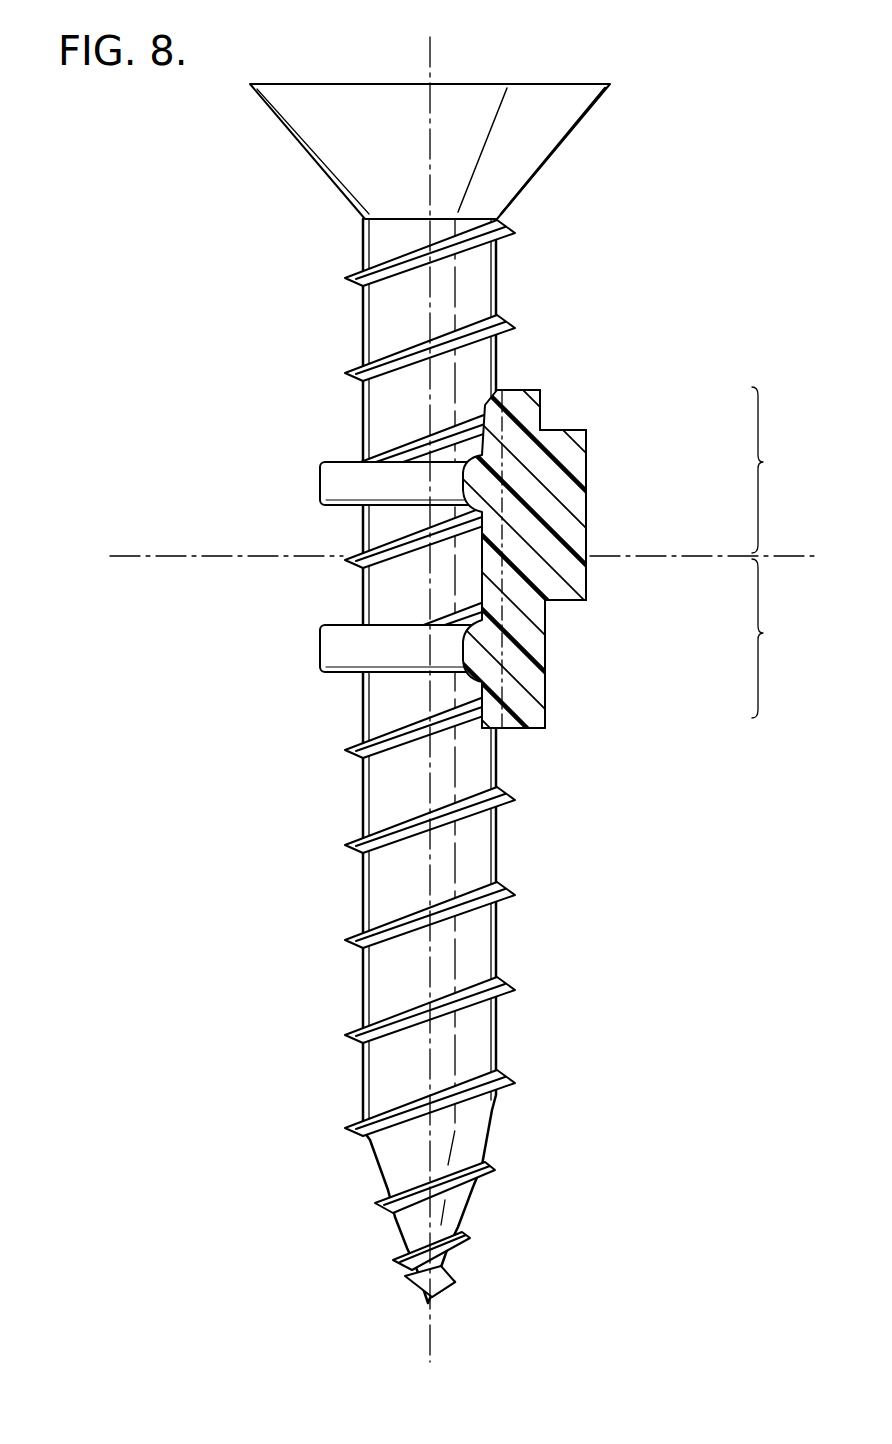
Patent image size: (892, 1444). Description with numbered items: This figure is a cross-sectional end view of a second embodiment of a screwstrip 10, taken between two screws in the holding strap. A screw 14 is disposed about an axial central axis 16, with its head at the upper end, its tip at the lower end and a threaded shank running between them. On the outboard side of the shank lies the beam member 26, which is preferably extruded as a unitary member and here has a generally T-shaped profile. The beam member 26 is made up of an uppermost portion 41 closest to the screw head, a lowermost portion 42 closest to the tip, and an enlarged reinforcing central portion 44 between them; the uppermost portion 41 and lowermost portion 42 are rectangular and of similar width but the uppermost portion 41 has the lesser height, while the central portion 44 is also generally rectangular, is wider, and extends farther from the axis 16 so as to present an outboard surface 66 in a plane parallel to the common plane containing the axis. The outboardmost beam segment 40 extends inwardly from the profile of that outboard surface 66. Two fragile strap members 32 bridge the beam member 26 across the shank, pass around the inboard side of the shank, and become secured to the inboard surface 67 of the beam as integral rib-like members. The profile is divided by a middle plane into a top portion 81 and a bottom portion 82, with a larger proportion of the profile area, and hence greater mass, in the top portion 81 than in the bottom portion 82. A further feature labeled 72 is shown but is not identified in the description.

The screwstrip 10 is at (261, 293).
The screw 14 is at (583, 213).
The axial central axis 16 is at (431, 56).
The beam member 26 is at (507, 529).
The fragile strap member 32 is at (318, 484).
The outboardmost beam segment 40 is at (433, 758).
The uppermost portion 41 is at (548, 402).
The lowermost portion 42 is at (545, 712).
The enlarged reinforcing central portion 44 is at (588, 584).
The outboard surface 66 is at (588, 540).
The inboard surface 67 is at (470, 557).
The thread groove 72 is at (365, 609).
The top portion 81 is at (777, 470).
The bottom portion 82 is at (777, 638).